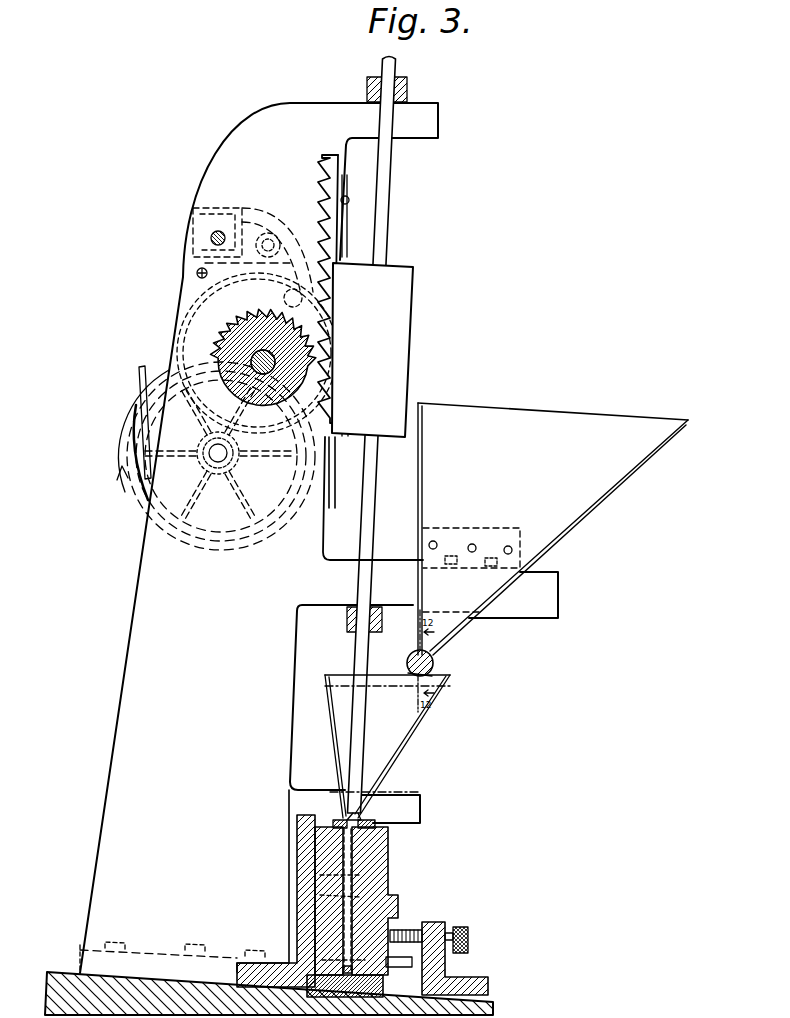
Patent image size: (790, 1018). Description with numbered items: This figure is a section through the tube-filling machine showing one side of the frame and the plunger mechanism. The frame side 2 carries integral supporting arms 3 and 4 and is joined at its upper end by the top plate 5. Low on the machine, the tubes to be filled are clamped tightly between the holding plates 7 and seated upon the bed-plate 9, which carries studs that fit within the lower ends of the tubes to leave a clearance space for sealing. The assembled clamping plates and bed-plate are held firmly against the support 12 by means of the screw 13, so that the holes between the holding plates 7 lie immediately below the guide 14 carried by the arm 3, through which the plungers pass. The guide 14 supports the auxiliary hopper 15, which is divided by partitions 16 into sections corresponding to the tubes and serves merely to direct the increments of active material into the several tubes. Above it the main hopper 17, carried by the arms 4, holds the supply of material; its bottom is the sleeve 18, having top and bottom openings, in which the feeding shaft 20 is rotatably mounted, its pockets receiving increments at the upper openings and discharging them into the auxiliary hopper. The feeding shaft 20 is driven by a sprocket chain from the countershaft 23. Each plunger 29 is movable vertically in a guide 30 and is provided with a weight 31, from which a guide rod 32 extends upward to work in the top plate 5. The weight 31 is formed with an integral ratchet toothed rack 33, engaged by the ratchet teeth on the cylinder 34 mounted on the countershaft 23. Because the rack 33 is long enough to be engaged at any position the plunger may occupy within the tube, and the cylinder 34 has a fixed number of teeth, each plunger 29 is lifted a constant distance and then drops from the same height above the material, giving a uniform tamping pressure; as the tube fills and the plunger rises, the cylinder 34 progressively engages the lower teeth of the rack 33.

The side 2 is at (269, 559).
The supporting arm 3 is at (403, 810).
The supporting arm 4 is at (545, 588).
The top plate 5 is at (408, 88).
The holding plate 7 is at (296, 848).
The bed-plate 9 is at (371, 985).
The support 12 is at (300, 897).
The screw 13 is at (410, 930).
The guide 14 is at (376, 826).
The hopper 15 is at (405, 752).
The partition 16 is at (387, 746).
The main hopper 17 is at (612, 487).
The sleeve 18 is at (434, 663).
The feeding shaft 20 is at (432, 676).
The countershaft 23 is at (276, 362).
The plunger 29 is at (360, 656).
The guide 30 is at (346, 620).
The weight 31 is at (410, 295).
The guide rod 32 is at (389, 210).
The ratchet toothed rack 33 is at (321, 165).
The cylinder 34 is at (232, 428).